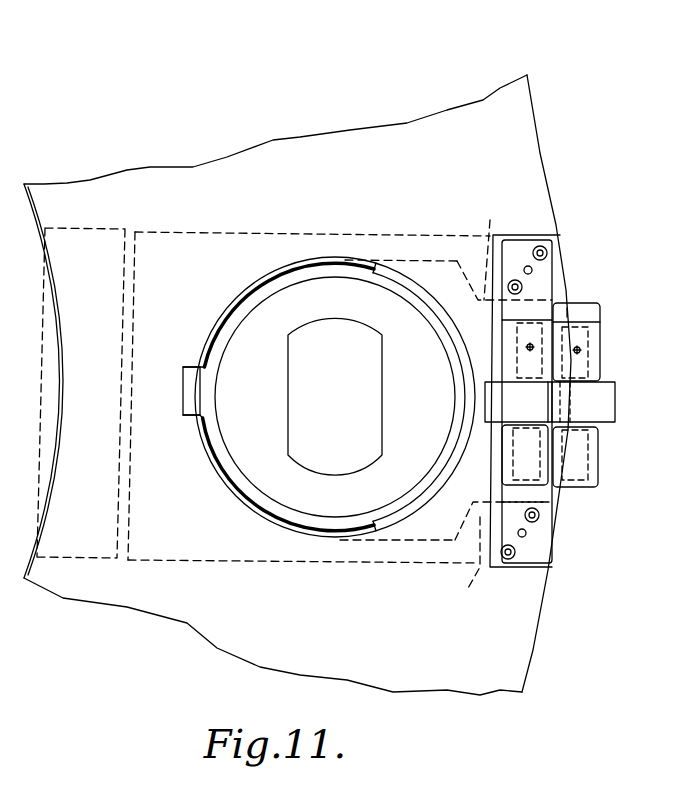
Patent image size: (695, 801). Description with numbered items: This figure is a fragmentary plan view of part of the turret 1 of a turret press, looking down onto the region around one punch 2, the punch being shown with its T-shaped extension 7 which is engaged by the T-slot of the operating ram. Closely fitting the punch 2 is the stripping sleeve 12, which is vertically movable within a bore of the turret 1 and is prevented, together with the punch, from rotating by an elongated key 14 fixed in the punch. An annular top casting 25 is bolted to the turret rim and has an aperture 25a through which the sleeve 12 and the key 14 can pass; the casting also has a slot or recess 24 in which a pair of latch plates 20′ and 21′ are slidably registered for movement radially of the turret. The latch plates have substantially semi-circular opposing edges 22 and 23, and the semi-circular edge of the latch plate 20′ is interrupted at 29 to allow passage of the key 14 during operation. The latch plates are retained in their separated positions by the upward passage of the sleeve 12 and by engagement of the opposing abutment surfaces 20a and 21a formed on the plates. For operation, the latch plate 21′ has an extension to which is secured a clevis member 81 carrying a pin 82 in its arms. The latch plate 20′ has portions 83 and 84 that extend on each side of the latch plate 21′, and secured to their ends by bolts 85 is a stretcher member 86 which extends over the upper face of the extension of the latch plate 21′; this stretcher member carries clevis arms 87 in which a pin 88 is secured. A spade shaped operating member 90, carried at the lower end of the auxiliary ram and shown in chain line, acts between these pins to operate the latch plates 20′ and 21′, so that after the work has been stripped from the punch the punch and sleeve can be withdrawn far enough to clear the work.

The turret 1 is at (50, 306).
The punch 2 is at (352, 270).
The extension of the punch 7 is at (328, 407).
The sleeve 12 is at (203, 388).
The key 14 is at (188, 413).
The latch plate 20′ is at (187, 543).
The abutment surface 20a is at (486, 400).
The latch plate 21′ is at (407, 532).
The abutment surface 21a is at (488, 406).
The semi-circular opposing edge 22 is at (287, 273).
The semi-circular opposing edge 23 is at (422, 302).
The slot or recess 24 is at (210, 224).
The annular top casting 25 is at (530, 152).
The aperture 25a is at (238, 305).
The interruption 29 is at (183, 383).
The clevis member 81 is at (597, 347).
The pin 82 is at (577, 412).
The portion of latch plate 83 is at (375, 553).
The portion of latch plate 84 is at (425, 242).
The bolt 85 is at (547, 253).
The stretcher member 86 is at (540, 542).
The clevis arm 87 is at (600, 318).
The pin 88 is at (527, 402).
The spade shaped operating member 90 is at (610, 392).